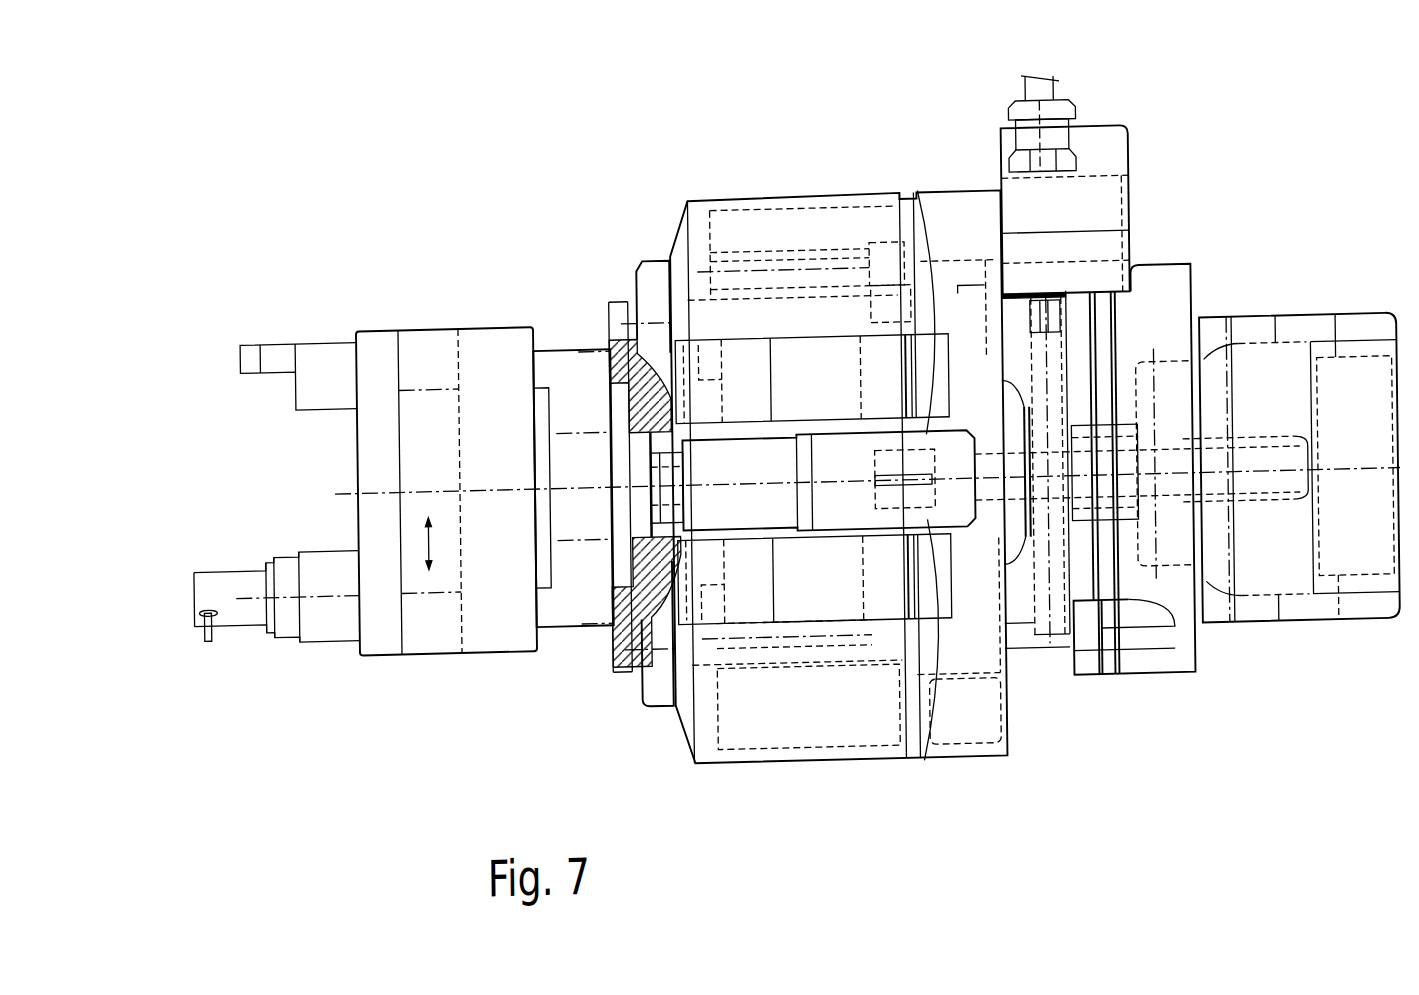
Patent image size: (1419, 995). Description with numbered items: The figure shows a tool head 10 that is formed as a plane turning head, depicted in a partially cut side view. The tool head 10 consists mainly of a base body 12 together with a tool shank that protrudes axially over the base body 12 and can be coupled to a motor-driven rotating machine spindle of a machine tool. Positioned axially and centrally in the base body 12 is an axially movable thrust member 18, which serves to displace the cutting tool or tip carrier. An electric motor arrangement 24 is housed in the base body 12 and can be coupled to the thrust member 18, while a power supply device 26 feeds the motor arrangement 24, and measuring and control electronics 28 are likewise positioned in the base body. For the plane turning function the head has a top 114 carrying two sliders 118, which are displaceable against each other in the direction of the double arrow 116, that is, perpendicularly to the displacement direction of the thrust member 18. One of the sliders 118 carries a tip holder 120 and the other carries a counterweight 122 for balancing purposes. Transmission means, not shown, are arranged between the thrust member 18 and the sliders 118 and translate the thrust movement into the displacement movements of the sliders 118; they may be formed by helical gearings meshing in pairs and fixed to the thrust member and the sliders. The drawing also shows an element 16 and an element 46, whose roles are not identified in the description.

The tool head 10 is at (779, 760).
The base body 12 is at (888, 618).
The end housing 16 is at (1270, 622).
The thrust member 18 is at (915, 467).
The electric motor arrangement 24 is at (764, 591).
The power supply device 26 is at (992, 198).
The measuring and control electronics 28 is at (835, 229).
The shaft end 46 is at (1224, 470).
The top 114 is at (623, 313).
The double arrow 116 is at (427, 534).
The sliders 118 is at (419, 577).
The tip holder 120 is at (307, 573).
The counterweight 122 is at (325, 358).